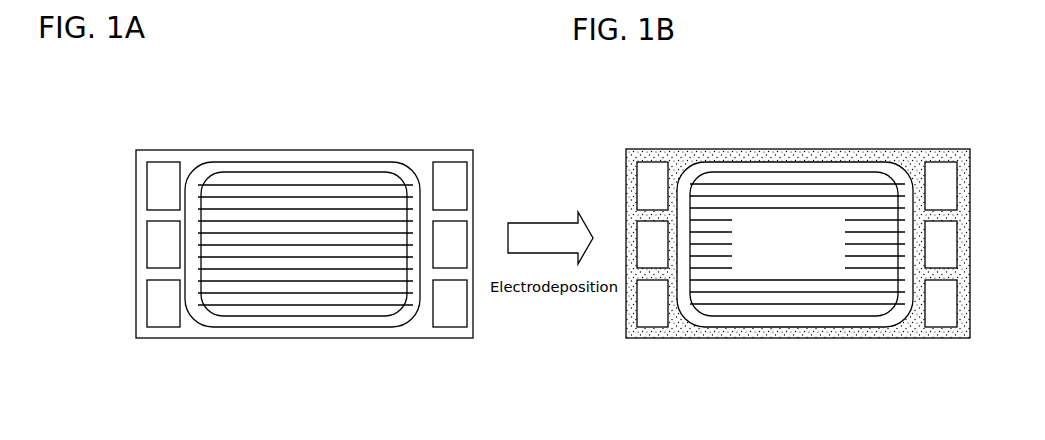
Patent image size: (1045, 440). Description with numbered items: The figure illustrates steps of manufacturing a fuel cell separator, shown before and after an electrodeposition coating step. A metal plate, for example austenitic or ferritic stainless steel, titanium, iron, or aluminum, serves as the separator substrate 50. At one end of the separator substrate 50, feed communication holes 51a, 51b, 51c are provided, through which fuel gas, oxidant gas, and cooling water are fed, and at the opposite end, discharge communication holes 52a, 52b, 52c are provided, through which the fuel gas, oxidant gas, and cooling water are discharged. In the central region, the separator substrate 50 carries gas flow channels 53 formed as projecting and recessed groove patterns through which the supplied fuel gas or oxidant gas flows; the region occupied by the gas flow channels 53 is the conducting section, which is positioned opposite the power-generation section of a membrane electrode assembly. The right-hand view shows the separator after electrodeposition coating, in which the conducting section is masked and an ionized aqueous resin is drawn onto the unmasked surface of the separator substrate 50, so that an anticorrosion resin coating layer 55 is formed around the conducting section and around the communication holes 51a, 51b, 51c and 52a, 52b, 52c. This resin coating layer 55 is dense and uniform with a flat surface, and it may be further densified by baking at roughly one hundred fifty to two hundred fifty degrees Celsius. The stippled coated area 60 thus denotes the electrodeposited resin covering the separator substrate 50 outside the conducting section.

In FIG. 1A, the separator substrate 50 is at (198, 151).
In FIG. 1A, the feed communication hole 51a is at (449, 182).
In FIG. 1B, the feed communication hole 51a is at (940, 177).
In FIG. 1A, the feed communication hole 51b is at (452, 243).
In FIG. 1B, the feed communication hole 51b is at (938, 250).
In FIG. 1A, the feed communication hole 51c is at (452, 307).
In FIG. 1B, the feed communication hole 51c is at (942, 305).
In FIG. 1A, the discharge communication hole 52a is at (163, 307).
In FIG. 1B, the discharge communication hole 52a is at (650, 175).
In FIG. 1A, the discharge communication hole 52b is at (160, 240).
In FIG. 1B, the discharge communication hole 52b is at (645, 235).
In FIG. 1A, the discharge communication hole 52c is at (158, 177).
In FIG. 1A, the gas flow channels 53 is at (300, 197).
In FIG. 1B, the gas flow channels 53 is at (742, 178).
In FIG. 1B, the resin coating layer 55 is at (690, 338).
In FIG. 1B, the electrodeposited film 60 is at (827, 142).